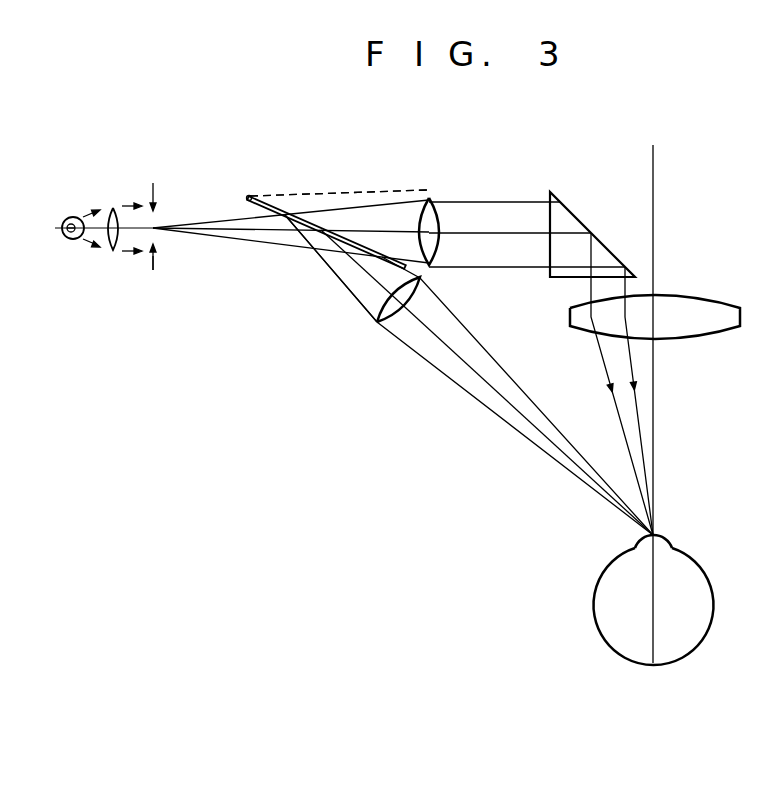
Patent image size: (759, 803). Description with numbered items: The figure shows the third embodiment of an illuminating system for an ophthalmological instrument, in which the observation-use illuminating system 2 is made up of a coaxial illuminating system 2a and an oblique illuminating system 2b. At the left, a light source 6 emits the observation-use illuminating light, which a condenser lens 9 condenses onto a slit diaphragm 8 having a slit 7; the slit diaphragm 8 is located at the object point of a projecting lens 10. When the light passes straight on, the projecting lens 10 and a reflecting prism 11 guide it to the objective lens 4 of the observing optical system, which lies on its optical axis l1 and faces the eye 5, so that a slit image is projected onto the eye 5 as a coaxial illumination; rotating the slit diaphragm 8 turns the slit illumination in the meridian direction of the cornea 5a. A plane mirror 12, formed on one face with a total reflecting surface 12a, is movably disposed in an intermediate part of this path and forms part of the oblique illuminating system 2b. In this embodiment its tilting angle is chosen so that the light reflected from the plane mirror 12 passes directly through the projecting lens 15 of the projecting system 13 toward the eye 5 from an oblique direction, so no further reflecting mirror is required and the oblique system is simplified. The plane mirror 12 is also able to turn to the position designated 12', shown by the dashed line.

The light source 6 is at (73, 217).
The condenser lens 9 is at (113, 250).
The slit 7 is at (155, 227).
The slit diaphragm 8 is at (153, 258).
The observation-use illuminating system 2 is at (395, 183).
The turned position of plane mirror 12' is at (338, 152).
The plane mirror 12 is at (326, 209).
The total reflecting surface 12a is at (252, 201).
The projecting lens 10 is at (435, 215).
The coaxial illuminating system 2a is at (505, 211).
The reflecting prism 11 is at (568, 212).
The optical axis l1 is at (656, 246).
The objective lens 4 is at (727, 315).
The oblique illuminating system 2b is at (445, 372).
The projecting system 13 is at (337, 298).
The projecting lens 15 is at (387, 313).
The eye 5 is at (695, 578).
The cornea 5a is at (670, 541).